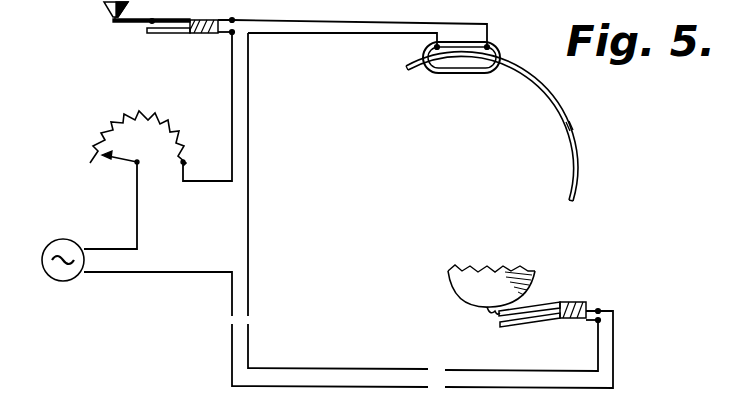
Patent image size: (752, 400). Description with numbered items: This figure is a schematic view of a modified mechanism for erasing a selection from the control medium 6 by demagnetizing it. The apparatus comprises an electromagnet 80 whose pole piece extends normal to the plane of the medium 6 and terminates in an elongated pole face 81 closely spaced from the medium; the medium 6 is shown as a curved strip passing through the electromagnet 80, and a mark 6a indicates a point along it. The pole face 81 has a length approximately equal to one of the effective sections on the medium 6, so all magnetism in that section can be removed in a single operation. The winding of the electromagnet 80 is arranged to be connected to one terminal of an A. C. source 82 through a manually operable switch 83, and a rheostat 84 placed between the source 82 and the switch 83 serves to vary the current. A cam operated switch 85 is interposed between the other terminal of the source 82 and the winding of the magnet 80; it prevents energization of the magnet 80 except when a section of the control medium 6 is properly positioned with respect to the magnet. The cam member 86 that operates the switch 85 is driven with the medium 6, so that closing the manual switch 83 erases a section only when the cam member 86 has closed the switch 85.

The control medium 6 is at (577, 172).
The tube joint 6a is at (573, 129).
The electromagnet 80 is at (500, 52).
The pole face 81 is at (457, 69).
The A. C. source 82 is at (72, 281).
The manually operable switch 83 is at (108, 21).
The rheostat 84 is at (177, 112).
The cam operated switch 85 is at (469, 310).
The cam member 86 is at (510, 272).